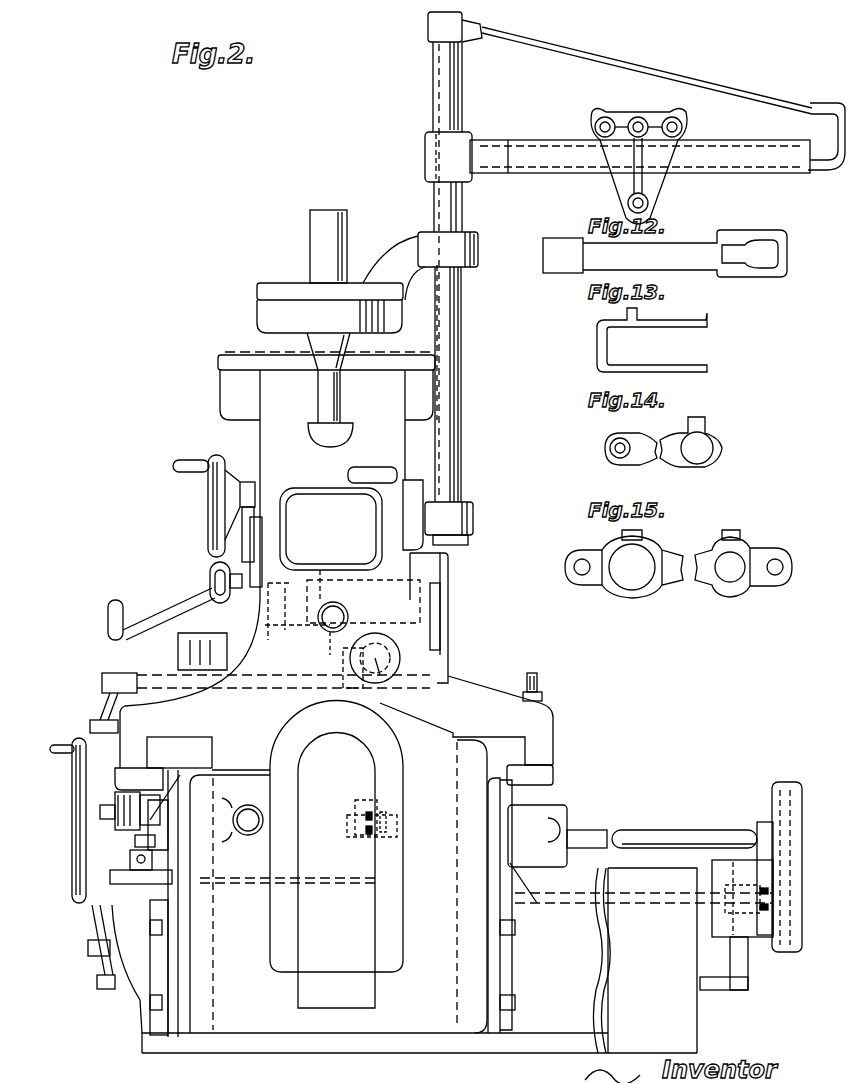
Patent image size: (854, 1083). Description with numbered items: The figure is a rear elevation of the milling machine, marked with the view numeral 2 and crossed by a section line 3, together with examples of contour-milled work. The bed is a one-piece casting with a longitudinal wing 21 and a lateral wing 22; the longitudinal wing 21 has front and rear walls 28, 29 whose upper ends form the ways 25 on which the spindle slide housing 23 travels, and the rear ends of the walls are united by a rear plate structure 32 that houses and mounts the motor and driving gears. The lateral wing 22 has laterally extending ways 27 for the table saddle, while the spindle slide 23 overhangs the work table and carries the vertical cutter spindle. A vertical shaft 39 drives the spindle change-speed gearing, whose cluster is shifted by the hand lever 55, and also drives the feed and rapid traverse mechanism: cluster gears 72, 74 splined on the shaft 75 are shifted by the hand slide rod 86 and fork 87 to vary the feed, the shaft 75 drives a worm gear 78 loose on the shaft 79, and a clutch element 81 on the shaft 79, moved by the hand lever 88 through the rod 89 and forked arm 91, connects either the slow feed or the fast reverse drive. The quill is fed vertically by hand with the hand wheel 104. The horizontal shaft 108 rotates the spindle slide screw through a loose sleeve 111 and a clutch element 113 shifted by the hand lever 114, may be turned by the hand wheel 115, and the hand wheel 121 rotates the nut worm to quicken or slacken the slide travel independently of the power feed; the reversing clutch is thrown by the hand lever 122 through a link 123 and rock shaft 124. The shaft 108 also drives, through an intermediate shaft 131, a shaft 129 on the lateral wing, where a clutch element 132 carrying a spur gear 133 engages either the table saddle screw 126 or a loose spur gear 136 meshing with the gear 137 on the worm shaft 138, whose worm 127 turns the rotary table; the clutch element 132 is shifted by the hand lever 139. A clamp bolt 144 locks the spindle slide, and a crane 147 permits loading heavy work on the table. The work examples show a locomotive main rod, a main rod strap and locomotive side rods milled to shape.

The section line 2- 2 is at (338, 1033).
The section line 3- 3 is at (328, 207).
The longitudinal wing 21 is at (263, 1047).
The lateral wing 22 is at (645, 1046).
The spindle slide 23 is at (267, 439).
The ways 25 is at (205, 740).
The laterally extending ways 27 is at (648, 868).
The front wall 28 is at (178, 927).
The rear wall 29 is at (500, 957).
The rear plate structure 32 is at (350, 855).
The vertical shaft 39 is at (323, 388).
The hand lever 55 is at (210, 565).
The cluster gear 72 is at (347, 606).
The cluster gear 74 is at (322, 655).
The shaft 75 is at (305, 598).
The worm gear 78 is at (310, 640).
The shaft 79 is at (395, 676).
The clutch element 81 is at (371, 688).
The hand slide rod 86 is at (264, 552).
The fork 87 is at (320, 575).
The hand lever 88 is at (112, 673).
The rod 89 is at (258, 690).
The forked arm 91 is at (350, 668).
The hand wheel 104 is at (208, 490).
The horizontal shaft 108 is at (122, 807).
The sleeve 111 is at (171, 807).
The clutch element 113 is at (137, 846).
The hand lever 114 is at (122, 795).
The hand wheel 115 is at (80, 745).
The hand wheel 121 is at (158, 612).
The hand lever 122 is at (140, 884).
The link 123 is at (242, 885).
The rock shaft 124 is at (395, 840).
The table saddle screw 126 is at (385, 806).
The worm 127 is at (395, 815).
The shaft 129 is at (693, 912).
The intermediate shaft 131 is at (566, 832).
The clutch element 132 is at (756, 930).
The spur gear 133 is at (750, 938).
The spur gear 136 is at (790, 917).
The gear 137 is at (796, 810).
The worm shaft 138 is at (703, 830).
The hand lever 139 is at (90, 925).
The clamp bolt 144 is at (531, 673).
The crane 147 is at (705, 163).